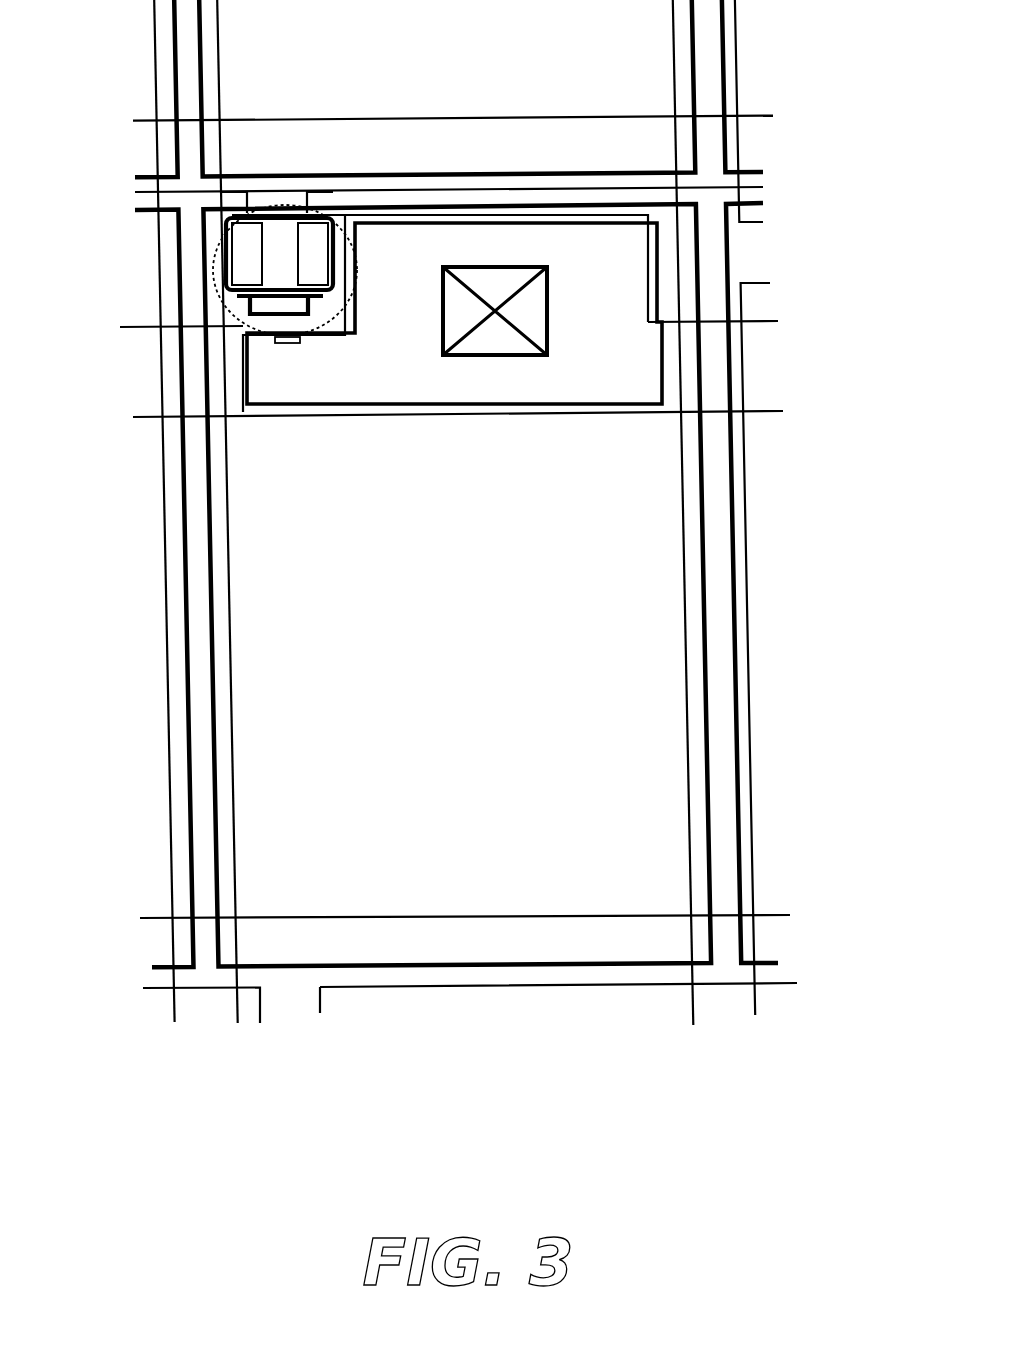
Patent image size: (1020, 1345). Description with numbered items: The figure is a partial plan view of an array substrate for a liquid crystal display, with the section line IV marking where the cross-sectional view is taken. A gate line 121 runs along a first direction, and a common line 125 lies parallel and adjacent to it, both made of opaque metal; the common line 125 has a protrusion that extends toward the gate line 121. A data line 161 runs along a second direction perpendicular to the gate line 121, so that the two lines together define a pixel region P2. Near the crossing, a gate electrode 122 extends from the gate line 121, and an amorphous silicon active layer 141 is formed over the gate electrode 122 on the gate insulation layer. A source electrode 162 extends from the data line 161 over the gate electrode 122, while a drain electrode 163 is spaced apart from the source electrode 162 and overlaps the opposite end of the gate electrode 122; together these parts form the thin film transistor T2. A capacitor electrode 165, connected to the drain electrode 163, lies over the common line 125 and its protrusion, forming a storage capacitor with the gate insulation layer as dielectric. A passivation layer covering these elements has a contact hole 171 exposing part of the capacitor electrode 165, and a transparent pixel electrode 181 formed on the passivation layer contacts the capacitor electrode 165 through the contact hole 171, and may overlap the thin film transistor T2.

The gate line 121 is at (573, 120).
The pixel electrode 181 is at (483, 175).
The data line 161 is at (750, 531).
The common line 125 is at (433, 412).
The capacitor electrode 165 is at (610, 408).
The contact hole 171 is at (534, 365).
The thin film transistor T2 is at (233, 318).
The gate electrode 122 is at (293, 315).
The active layer 141 is at (272, 300).
The source electrode 162 is at (264, 268).
The drain electrode 163 is at (297, 267).
The pixel region P2 is at (640, 745).
The section line IV- IV is at (190, 253).